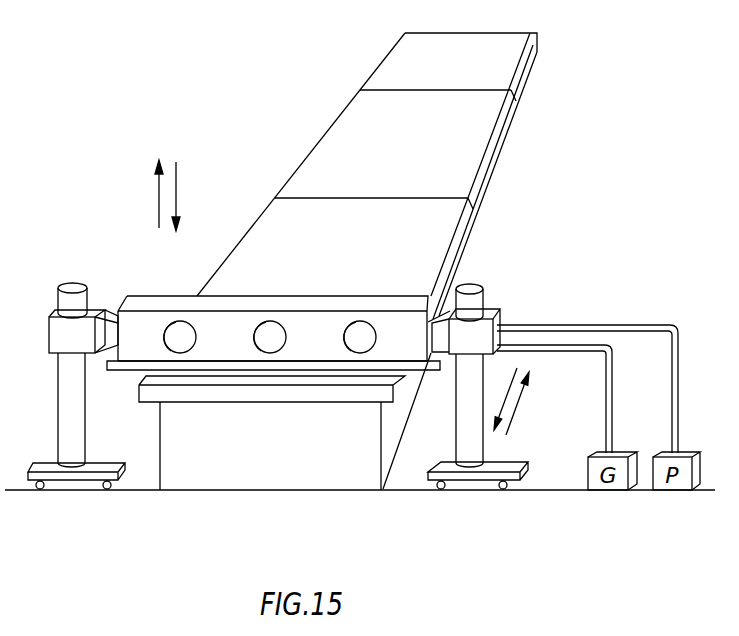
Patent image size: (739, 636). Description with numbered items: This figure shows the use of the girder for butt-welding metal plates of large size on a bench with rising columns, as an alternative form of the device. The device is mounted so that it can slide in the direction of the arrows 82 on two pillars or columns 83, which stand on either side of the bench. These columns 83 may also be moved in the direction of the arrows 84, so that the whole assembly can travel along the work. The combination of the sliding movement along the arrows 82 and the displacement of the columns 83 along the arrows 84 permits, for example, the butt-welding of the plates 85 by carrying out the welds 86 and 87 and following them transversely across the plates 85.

The arrows 82 is at (151, 195).
The pillars or columns 83 is at (75, 457).
The arrows 84 is at (528, 401).
The plates 85 is at (473, 161).
The weld 86 is at (305, 197).
The weld 87 is at (395, 90).